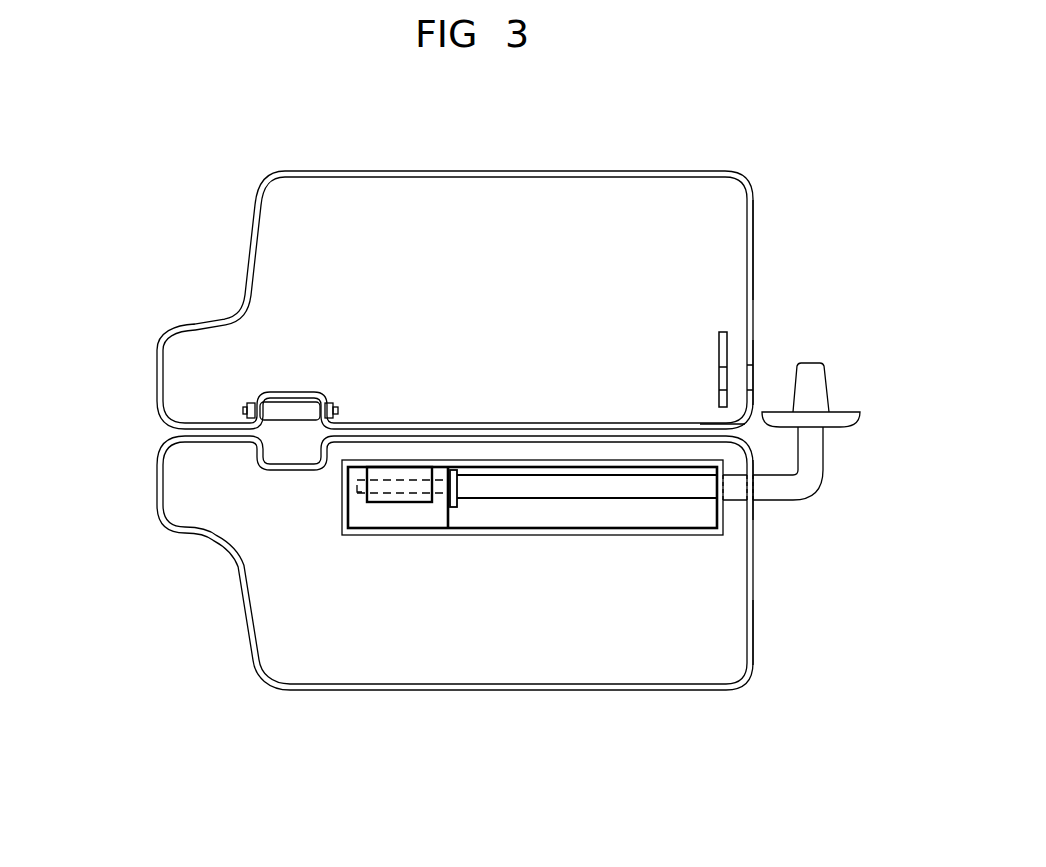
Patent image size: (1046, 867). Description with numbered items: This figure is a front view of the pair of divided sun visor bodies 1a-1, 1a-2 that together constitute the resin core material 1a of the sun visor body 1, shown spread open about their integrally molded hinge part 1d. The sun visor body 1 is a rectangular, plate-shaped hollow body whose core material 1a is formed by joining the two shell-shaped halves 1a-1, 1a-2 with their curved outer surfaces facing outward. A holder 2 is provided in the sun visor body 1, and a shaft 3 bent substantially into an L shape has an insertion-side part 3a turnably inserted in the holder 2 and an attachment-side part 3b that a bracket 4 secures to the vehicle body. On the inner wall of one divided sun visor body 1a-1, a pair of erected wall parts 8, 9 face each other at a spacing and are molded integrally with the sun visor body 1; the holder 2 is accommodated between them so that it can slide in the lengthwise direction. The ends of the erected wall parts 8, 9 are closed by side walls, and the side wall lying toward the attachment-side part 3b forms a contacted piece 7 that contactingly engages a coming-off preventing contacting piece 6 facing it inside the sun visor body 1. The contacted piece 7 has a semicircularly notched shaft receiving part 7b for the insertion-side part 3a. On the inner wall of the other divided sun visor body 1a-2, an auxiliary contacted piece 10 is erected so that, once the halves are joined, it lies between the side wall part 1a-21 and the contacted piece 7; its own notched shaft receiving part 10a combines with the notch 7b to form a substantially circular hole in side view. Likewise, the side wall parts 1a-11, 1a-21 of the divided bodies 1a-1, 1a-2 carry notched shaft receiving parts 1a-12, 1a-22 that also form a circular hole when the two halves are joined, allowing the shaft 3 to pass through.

The sun visor body 1 is at (240, 660).
The resin core material 1a is at (97, 285).
The divided sun visor body 1a-1 is at (163, 530).
The divided sun visor body 1a-2 is at (163, 337).
The side wall part 1a-11 is at (758, 673).
The notched shaft receiving part 1a-12 is at (752, 487).
The side wall part 1a-21 is at (755, 213).
The notched shaft receiving part 1a-22 is at (752, 380).
The hinge part 1d is at (376, 432).
The holder 2 is at (417, 473).
The shaft 3 is at (880, 503).
The insertion-side part 3a is at (665, 500).
The attachment-side part 3b is at (818, 471).
The bracket 4 is at (838, 410).
The coming-off preventing contacting piece 6 is at (462, 470).
The contacted piece 7 is at (723, 525).
The notched shaft receiving part 7b is at (702, 405).
The erected wall part 8 is at (545, 535).
The erected wall part 9 is at (547, 460).
The auxiliary contacted piece 10 is at (728, 328).
The notched shaft receiving part 10a is at (719, 377).